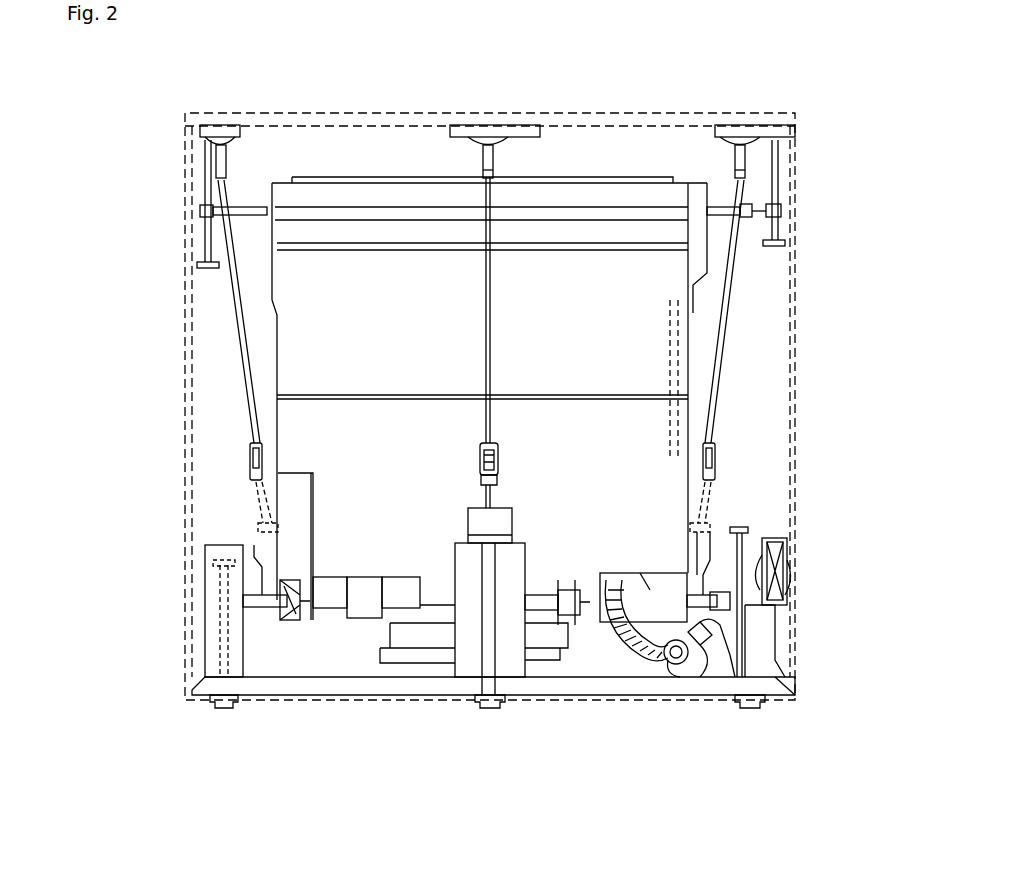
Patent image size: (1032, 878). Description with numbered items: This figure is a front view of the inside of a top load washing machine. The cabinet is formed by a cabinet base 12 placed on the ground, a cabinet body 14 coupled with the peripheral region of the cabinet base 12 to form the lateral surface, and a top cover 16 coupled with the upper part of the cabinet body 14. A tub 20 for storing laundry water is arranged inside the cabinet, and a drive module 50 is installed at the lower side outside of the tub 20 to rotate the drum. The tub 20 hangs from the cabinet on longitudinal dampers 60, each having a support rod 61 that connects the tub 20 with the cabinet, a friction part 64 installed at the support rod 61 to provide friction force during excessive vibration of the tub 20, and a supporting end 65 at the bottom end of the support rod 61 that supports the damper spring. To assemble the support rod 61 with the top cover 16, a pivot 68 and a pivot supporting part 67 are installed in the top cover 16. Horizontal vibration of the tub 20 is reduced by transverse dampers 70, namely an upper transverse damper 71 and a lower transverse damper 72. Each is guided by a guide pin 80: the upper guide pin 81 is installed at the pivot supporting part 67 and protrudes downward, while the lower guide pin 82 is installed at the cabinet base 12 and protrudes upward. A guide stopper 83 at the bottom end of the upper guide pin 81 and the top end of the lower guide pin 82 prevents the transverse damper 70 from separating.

The cabinet base 12 is at (270, 697).
The cabinet body 14 is at (192, 388).
The top cover 16 is at (603, 118).
The tub 20 is at (343, 175).
The drive module 50 is at (386, 642).
The longitudinal damper 60 is at (245, 468).
The support rod 61 is at (491, 300).
The friction part 64 is at (480, 460).
The supporting end 65 is at (258, 530).
The pivot supporting part 67 is at (218, 125).
The pivot 68 is at (216, 160).
The transverse damper 70 is at (722, 190).
The upper transverse damper 71 is at (250, 195).
The lower transverse damper 72 is at (250, 595).
The guide pin 80 is at (778, 150).
The upper guide pin 81 is at (205, 190).
The lower guide pin 82 is at (220, 622).
The guide stopper 83 is at (197, 266).